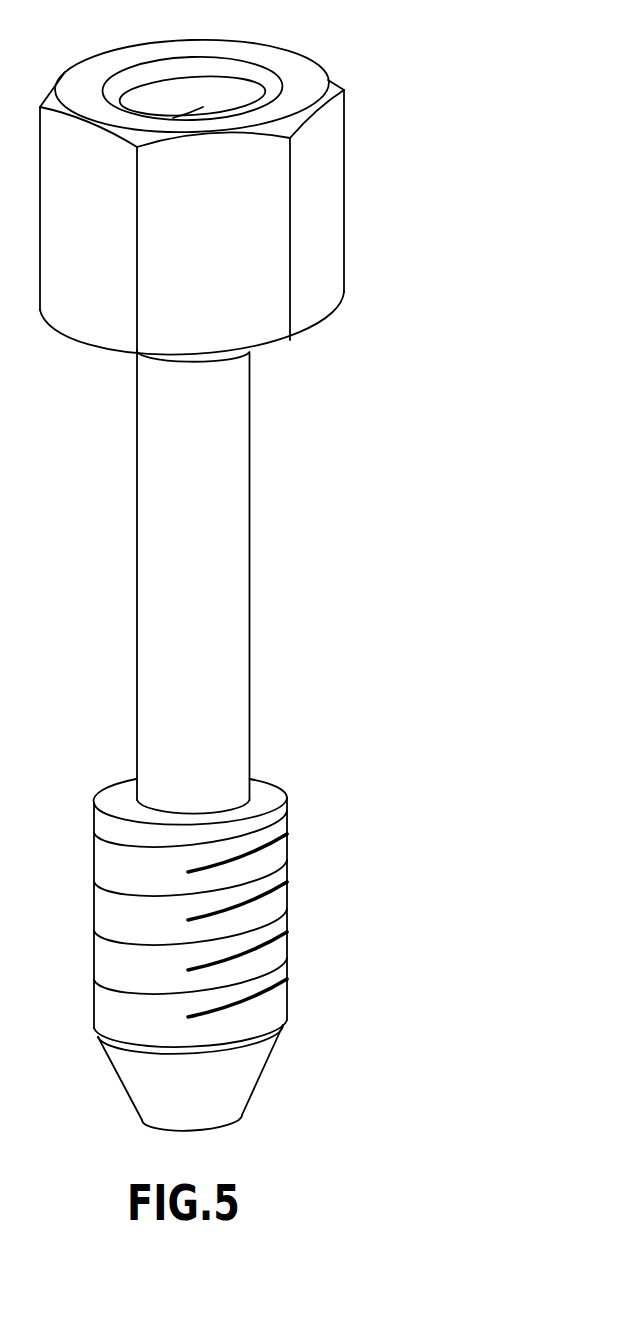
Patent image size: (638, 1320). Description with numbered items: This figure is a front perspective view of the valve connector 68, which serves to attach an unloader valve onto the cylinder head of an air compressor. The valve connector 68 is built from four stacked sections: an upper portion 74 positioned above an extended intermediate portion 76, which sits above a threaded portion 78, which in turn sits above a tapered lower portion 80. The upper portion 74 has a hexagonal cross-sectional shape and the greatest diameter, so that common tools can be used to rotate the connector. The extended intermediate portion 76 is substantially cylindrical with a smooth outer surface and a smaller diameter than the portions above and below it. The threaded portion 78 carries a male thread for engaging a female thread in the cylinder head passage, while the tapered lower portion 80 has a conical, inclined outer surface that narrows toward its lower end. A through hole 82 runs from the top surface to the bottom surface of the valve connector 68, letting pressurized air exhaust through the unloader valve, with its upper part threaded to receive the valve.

The valve connector 68 is at (395, 70).
The upper portion 74 is at (323, 198).
The extended intermediate portion 76 is at (208, 587).
The threaded portion 78 is at (265, 935).
The tapered lower portion 80 is at (253, 1068).
The through hole 82 is at (193, 90).